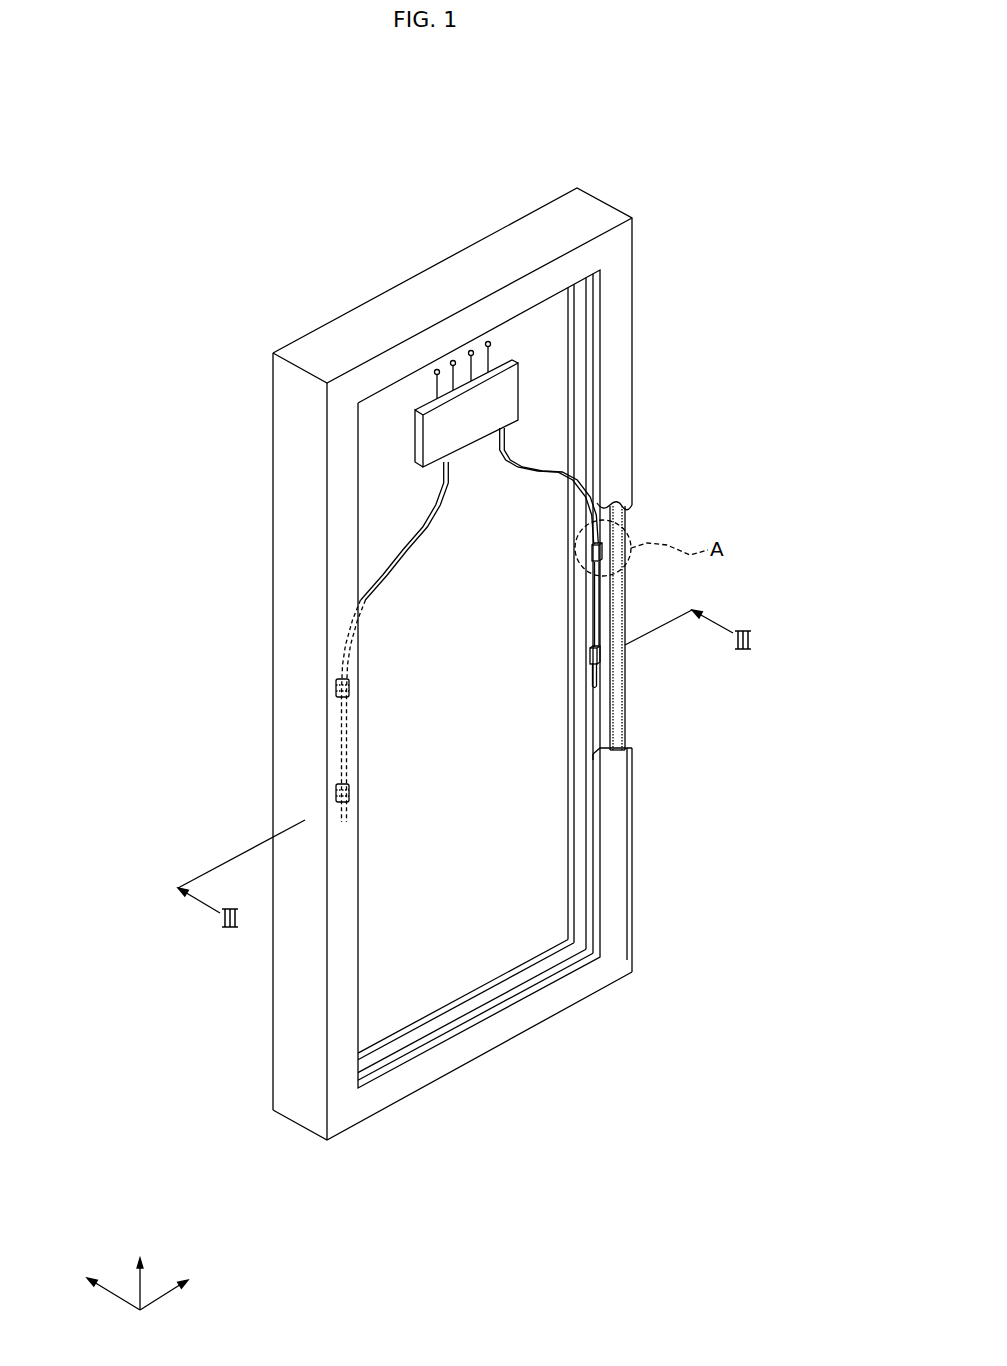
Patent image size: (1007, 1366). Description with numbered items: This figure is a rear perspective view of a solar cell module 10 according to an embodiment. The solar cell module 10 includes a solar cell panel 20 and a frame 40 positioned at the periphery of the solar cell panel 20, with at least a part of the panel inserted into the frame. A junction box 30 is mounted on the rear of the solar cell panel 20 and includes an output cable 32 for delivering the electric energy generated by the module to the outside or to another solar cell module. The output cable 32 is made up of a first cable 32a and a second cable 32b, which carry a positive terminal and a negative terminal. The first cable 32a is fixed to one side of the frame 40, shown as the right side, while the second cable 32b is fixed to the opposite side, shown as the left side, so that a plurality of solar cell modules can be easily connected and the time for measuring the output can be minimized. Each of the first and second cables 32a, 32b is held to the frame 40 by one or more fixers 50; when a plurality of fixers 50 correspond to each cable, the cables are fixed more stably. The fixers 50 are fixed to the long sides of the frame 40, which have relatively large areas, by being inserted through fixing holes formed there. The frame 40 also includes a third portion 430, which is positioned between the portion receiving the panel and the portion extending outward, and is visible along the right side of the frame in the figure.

The solar cell module 10 is at (193, 224).
The solar cell panel 20 is at (489, 672).
The junction box 30 is at (353, 422).
The output cable 32 is at (173, 557).
The first cable 32a is at (390, 558).
The second cable 32b is at (310, 642).
The frame 40 is at (470, 636).
The fixer 50 is at (655, 576).
The third portion 430 is at (698, 628).